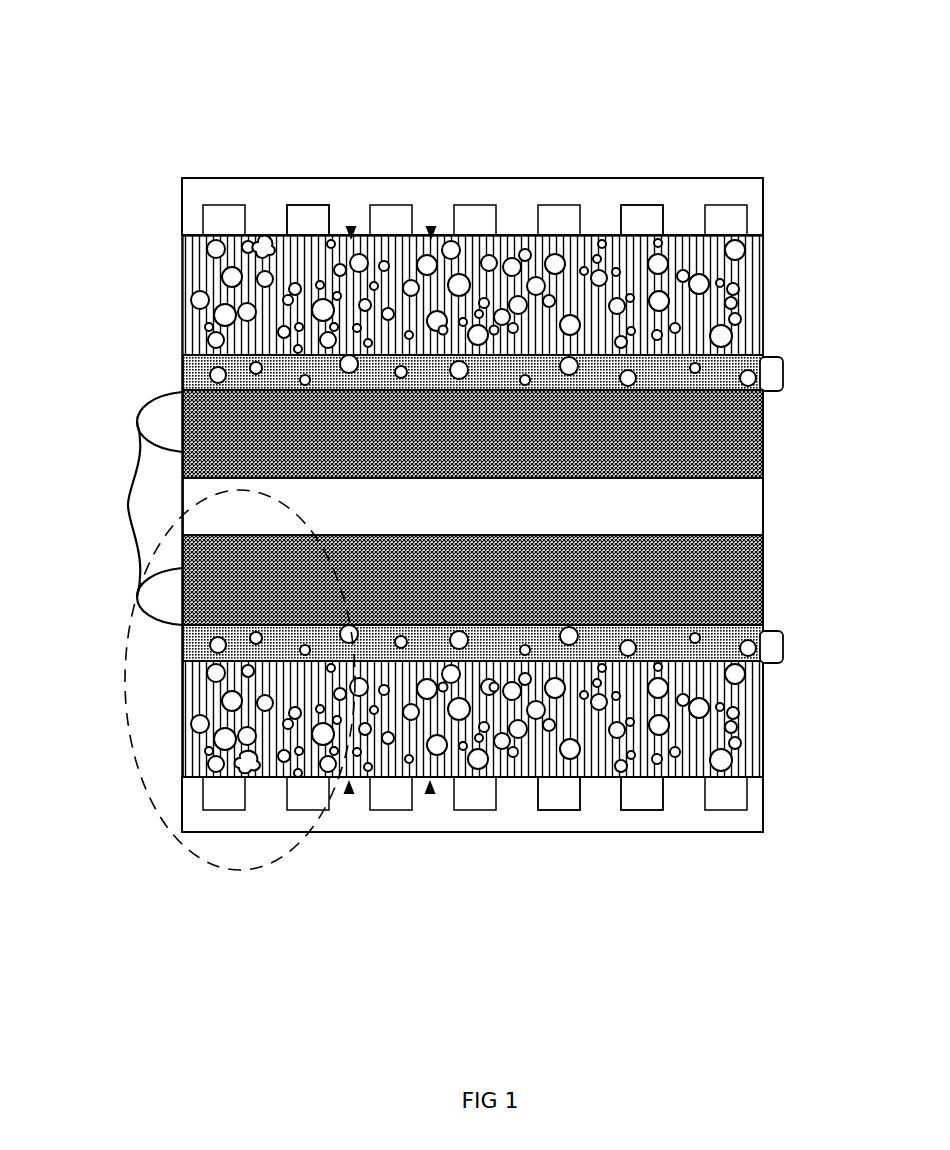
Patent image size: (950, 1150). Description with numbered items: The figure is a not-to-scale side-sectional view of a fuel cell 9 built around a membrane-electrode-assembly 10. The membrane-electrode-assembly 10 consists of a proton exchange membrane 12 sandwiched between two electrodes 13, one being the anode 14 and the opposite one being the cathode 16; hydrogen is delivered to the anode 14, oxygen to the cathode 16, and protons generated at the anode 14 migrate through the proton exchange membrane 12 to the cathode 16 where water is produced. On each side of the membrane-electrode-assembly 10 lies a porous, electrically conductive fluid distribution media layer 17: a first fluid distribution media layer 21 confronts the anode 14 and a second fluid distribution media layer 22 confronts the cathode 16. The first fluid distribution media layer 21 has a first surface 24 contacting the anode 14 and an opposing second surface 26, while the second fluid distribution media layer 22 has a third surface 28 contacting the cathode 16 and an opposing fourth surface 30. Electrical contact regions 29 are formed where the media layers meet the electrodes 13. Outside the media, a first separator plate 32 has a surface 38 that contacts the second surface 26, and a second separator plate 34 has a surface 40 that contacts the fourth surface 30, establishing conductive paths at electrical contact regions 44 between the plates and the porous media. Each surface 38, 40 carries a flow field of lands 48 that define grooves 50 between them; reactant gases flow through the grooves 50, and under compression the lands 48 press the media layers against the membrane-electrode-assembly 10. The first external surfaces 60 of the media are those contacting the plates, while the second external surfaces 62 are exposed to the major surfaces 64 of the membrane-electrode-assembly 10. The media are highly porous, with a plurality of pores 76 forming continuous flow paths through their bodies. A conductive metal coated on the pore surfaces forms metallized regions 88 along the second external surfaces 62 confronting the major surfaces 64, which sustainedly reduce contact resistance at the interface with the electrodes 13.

The fuel cell 9 is at (745, 82).
The membrane-electrode-assembly 10 is at (128, 505).
The proton exchange membrane 12 is at (765, 487).
The electrodes 13 is at (137, 422).
The anode 14 is at (765, 573).
The cathode 16 is at (765, 442).
The fluid distribution media layers 17 is at (765, 266).
The first fluid distribution media layer 21 is at (765, 714).
The second fluid distribution media layer 22 is at (765, 300).
The first surface 24 is at (765, 621).
The second surface 26 is at (755, 778).
The third surface 28 is at (765, 400).
The electrical contact regions 29 is at (594, 388).
The fourth surface 30 is at (755, 236).
The first separator plate 32 is at (765, 808).
The second separator plate 34 is at (765, 210).
The surface 38 is at (182, 790).
The surface 40 is at (182, 235).
The electrical contact regions 44 is at (431, 228).
The lands 48 is at (268, 240).
The grooves 50 is at (312, 222).
The first external surfaces 60 is at (623, 237).
The second external surfaces 62 is at (700, 388).
The major surfaces 64 is at (182, 392).
The pores 76 is at (494, 326).
The metallized regions 88 is at (783, 376).